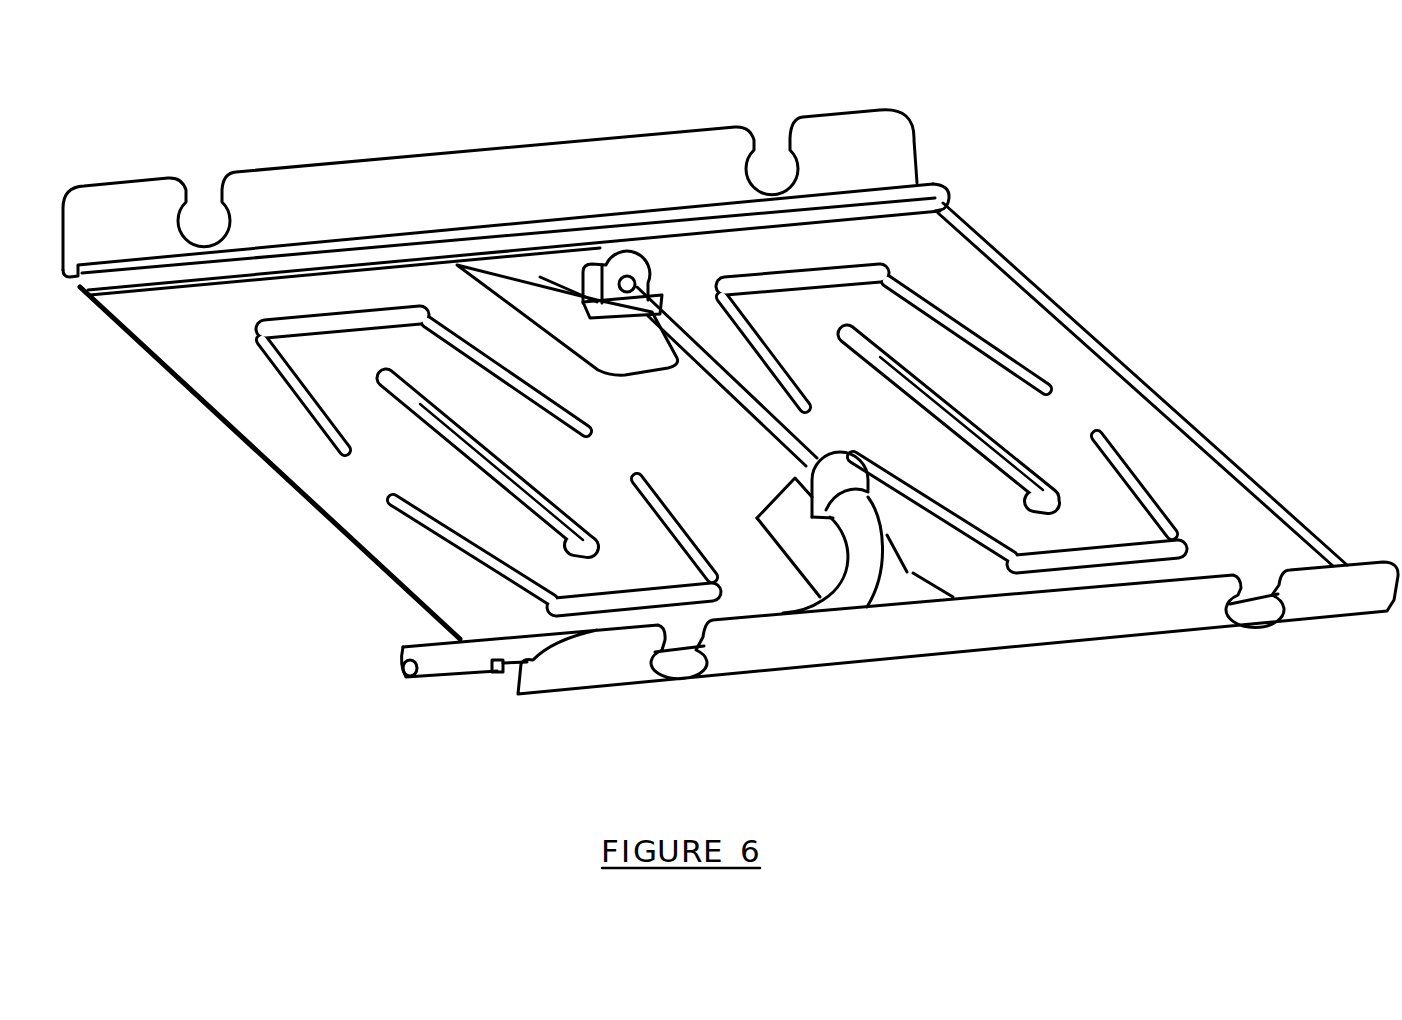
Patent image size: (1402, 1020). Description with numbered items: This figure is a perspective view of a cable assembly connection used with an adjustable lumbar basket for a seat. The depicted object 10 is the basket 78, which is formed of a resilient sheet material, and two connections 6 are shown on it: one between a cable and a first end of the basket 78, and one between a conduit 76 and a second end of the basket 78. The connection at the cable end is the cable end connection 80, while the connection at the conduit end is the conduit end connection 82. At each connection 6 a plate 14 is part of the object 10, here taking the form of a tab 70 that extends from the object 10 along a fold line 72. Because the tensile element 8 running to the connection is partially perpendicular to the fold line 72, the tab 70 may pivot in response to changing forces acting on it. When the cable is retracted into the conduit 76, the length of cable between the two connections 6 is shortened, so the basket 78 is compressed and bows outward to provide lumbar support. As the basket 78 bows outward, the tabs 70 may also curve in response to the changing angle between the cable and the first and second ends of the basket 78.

The connection 6 is at (687, 194).
The tensile element 8 is at (413, 707).
The object 10 is at (957, 207).
The plate 14 is at (923, 322).
The tab 70 is at (923, 322).
The fold line 72 is at (495, 264).
The conduit 76 is at (433, 672).
The basket 78 is at (733, 390).
The cable end connection 80 is at (647, 267).
The conduit end connection 82 is at (850, 460).